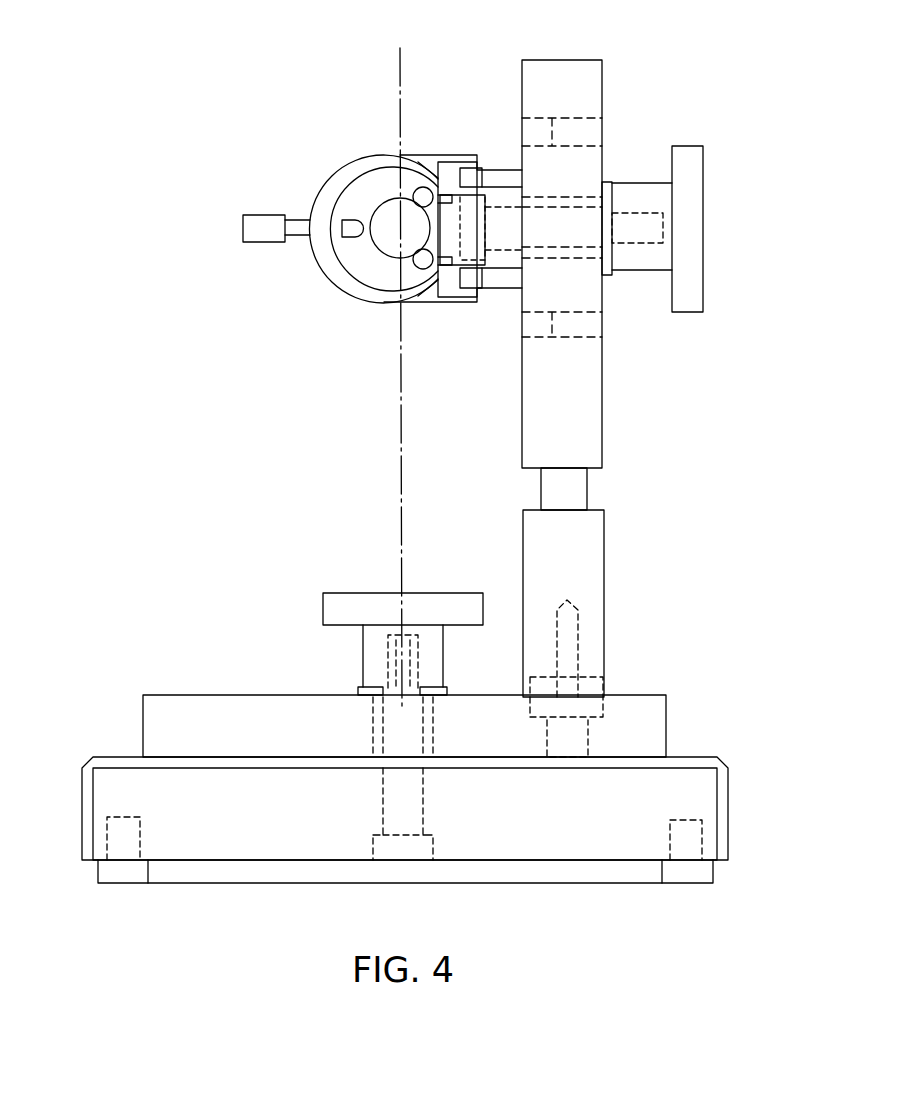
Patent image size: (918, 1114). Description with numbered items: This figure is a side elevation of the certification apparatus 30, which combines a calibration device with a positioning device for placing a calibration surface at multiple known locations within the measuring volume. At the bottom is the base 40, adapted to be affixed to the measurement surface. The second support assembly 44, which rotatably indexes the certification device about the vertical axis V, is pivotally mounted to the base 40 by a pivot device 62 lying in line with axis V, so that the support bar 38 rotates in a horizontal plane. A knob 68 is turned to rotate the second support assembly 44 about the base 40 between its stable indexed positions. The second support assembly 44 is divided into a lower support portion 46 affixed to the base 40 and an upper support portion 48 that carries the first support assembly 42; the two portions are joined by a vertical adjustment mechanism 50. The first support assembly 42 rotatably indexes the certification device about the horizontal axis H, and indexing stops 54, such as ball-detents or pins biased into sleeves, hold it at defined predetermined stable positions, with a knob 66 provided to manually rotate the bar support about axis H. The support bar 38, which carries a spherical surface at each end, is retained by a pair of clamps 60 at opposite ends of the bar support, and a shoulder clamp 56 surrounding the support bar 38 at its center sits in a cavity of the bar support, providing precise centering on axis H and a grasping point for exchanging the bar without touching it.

The certification apparatus 30 is at (140, 692).
The support bar 38 is at (378, 253).
The base 40 is at (726, 768).
The first support assembly 42 is at (478, 166).
The second support assembly 44 is at (642, 696).
The lower support portion 46 is at (604, 562).
The upper support portion 48 is at (603, 86).
The vertical adjustment mechanism 50 is at (587, 493).
The indexing stops 54 is at (603, 135).
The shoulder clamp 56 is at (443, 303).
The clamps 60 is at (320, 186).
The pivot device 62 is at (422, 762).
The knob 66 is at (705, 178).
The knob 68 is at (350, 598).